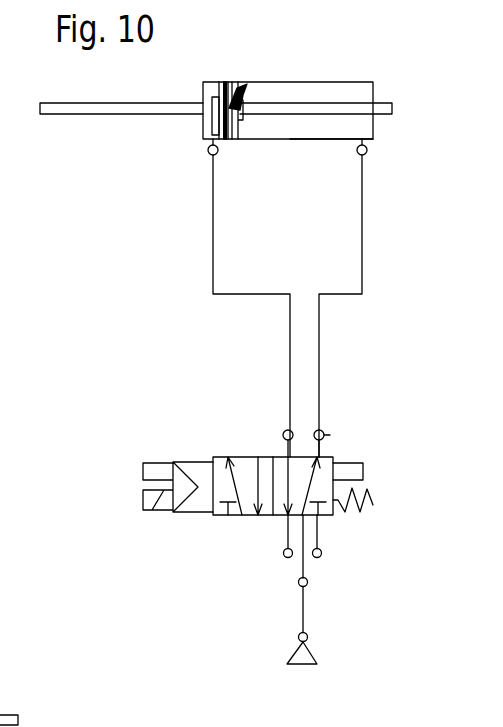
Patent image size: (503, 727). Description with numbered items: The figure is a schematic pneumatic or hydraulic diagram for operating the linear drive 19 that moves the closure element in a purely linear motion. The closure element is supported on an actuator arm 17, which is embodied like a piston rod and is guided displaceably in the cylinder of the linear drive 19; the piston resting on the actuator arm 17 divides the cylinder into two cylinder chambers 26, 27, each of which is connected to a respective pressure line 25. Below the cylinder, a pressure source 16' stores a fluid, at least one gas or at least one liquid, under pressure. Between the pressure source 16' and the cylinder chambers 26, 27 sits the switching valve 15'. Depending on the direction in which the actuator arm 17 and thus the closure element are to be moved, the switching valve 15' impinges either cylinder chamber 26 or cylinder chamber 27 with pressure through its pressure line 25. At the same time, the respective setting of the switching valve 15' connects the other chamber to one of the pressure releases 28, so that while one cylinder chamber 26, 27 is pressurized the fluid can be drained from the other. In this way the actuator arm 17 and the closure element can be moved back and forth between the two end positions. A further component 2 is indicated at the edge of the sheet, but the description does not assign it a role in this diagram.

The linear drive 19 is at (299, 70).
The actuator arm 17 is at (370, 111).
The cylinder chamber 26 is at (215, 124).
The cylinder chamber 27 is at (350, 133).
The pressure lines 25 is at (229, 157).
The switching valve 15' is at (258, 457).
The pressure releases 28 is at (284, 556).
The pressure source 16' is at (346, 589).
The component 2 is at (26, 719).